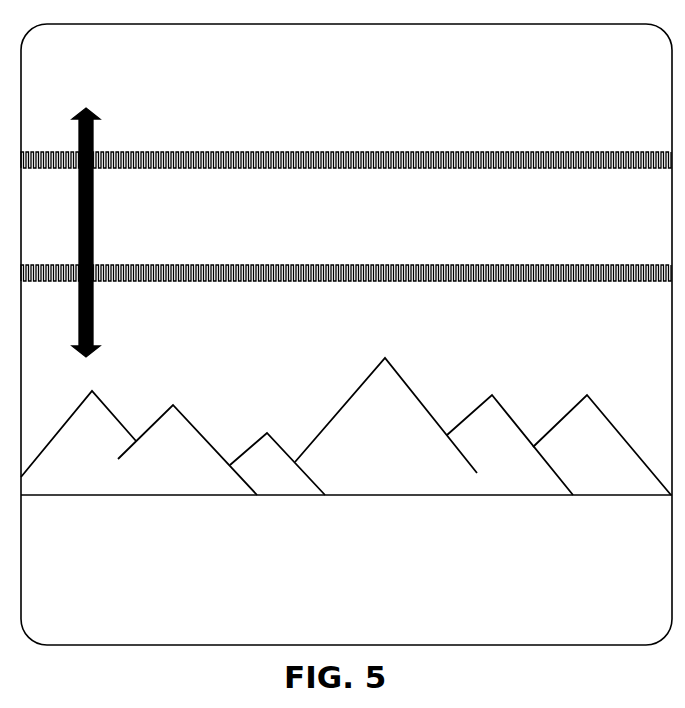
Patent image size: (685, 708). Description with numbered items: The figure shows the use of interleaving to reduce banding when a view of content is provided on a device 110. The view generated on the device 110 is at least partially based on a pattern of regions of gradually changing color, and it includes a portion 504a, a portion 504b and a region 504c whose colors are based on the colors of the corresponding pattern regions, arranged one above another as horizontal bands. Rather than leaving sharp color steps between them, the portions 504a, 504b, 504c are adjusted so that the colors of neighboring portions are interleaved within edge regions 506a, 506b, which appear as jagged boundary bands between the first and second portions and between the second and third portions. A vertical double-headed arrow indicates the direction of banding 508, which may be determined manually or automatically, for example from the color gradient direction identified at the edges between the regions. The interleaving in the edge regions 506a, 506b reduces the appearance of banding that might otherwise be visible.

The device 110 is at (116, 64).
The portion 504a is at (387, 127).
The portion 504b is at (387, 232).
The region 504c is at (386, 337).
The edge region 506a is at (627, 154).
The edge region 506b is at (632, 266).
The direction of banding 508 is at (93, 140).